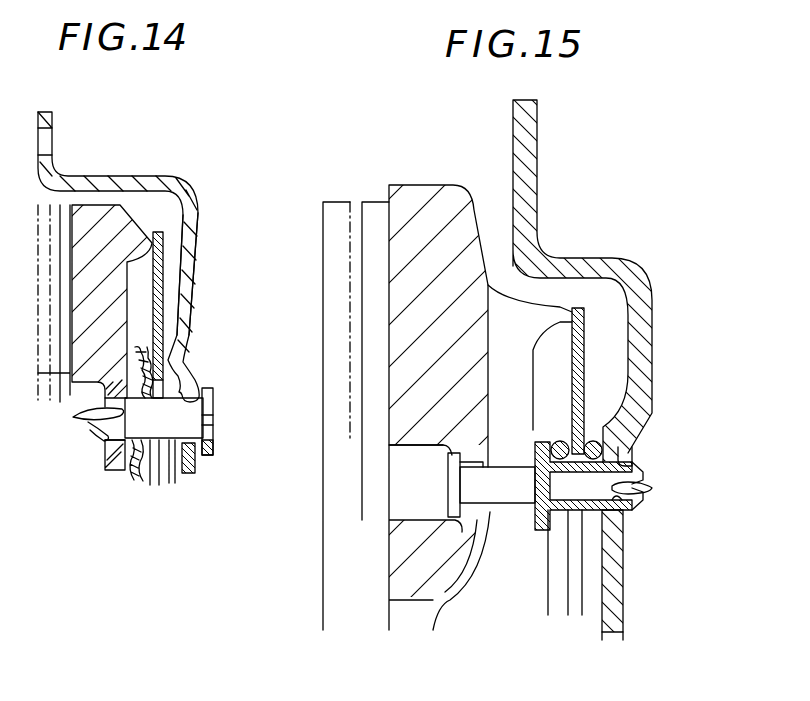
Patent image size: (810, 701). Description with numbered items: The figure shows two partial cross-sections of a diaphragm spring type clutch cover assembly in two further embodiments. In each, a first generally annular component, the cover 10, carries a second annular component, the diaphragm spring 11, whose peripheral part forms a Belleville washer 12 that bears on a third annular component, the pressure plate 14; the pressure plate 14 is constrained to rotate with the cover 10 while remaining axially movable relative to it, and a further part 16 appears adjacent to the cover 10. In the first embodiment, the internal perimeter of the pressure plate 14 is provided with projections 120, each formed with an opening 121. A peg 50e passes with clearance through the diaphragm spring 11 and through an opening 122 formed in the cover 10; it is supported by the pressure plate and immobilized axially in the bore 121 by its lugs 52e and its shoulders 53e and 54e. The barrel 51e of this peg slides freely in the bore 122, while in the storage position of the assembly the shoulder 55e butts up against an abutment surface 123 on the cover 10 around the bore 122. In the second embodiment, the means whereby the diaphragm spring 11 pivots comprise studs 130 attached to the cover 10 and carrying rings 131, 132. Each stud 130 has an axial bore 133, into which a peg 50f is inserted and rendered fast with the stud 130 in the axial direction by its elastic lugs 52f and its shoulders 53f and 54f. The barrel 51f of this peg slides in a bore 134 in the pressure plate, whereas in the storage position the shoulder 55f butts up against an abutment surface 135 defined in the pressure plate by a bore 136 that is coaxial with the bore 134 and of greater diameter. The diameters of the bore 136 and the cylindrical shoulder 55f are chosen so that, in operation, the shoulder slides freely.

In FIG. 14, the cover 10 is at (187, 182).
In FIG. 15, the cover 10 is at (632, 264).
In FIG. 14, the diaphragm spring 11 is at (156, 228).
In FIG. 15, the diaphragm spring 11 is at (586, 306).
In FIG. 14, the Belleville washer 12 is at (165, 272).
In FIG. 15, the Belleville washer 12 is at (586, 350).
In FIG. 14, the pressure plate 14 is at (92, 200).
In FIG. 15, the pressure plate 14 is at (432, 182).
In FIG. 14, the rim flange 16 is at (44, 112).
In FIG. 14, the peg 50e is at (218, 428).
In FIG. 14, the barrel 51e is at (166, 470).
In FIG. 14, the lugs 52e is at (90, 413).
In FIG. 14, the shoulder 53e is at (112, 376).
In FIG. 14, the shoulder 54e is at (133, 375).
In FIG. 14, the shoulder 55e is at (214, 446).
In FIG. 14, the projections 120 is at (115, 462).
In FIG. 14, the opening 121 is at (125, 428).
In FIG. 14, the opening 122 is at (209, 387).
In FIG. 14, the abutment surface 123 is at (197, 458).
In FIG. 15, the peg 50f is at (500, 462).
In FIG. 15, the barrel 51f is at (470, 488).
In FIG. 15, the elastic lugs 52f is at (652, 488).
In FIG. 15, the shoulder 53f is at (622, 450).
In FIG. 15, the shoulder 54f is at (548, 478).
In FIG. 15, the shoulder 55f is at (433, 432).
In FIG. 15, the studs 130 is at (533, 532).
In FIG. 15, the ring 131 is at (556, 440).
In FIG. 15, the ring 132 is at (592, 440).
In FIG. 15, the axial bore 133 is at (612, 512).
In FIG. 15, the bore 134 is at (474, 452).
In FIG. 15, the abutment surface 135 is at (458, 520).
In FIG. 15, the bore 136 is at (400, 448).